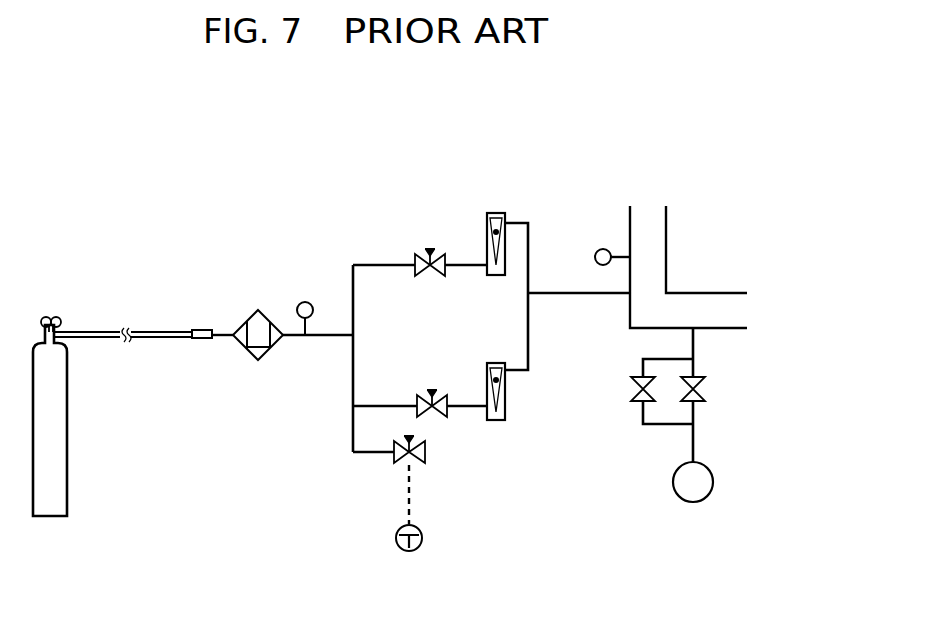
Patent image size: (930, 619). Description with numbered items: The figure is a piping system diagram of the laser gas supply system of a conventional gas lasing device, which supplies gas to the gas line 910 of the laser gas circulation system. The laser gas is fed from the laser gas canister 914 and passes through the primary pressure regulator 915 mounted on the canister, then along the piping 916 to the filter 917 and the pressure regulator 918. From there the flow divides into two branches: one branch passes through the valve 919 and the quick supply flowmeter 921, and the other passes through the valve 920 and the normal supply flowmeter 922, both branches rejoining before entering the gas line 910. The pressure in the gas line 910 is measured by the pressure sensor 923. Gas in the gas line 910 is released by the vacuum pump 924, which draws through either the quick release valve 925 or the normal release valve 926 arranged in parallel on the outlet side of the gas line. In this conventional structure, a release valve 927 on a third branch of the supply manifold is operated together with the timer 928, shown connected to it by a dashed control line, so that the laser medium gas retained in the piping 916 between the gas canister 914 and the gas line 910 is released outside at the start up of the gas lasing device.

The gas line 910 is at (690, 292).
The laser gas canister 914 is at (48, 517).
The primary pressure regulator 915 is at (47, 318).
The piping 916 is at (147, 340).
The filter 917 is at (250, 353).
The pressure regulator 918 is at (300, 302).
The valve 919 is at (420, 255).
The valve 920 is at (418, 397).
The quick supply flowmeter 921 is at (493, 213).
The normal supply flowmeter 922 is at (503, 422).
The pressure sensor 923 is at (599, 248).
The vacuum pump 924 is at (690, 503).
The quick release valve 925 is at (708, 398).
The normal release valve 926 is at (633, 400).
The release valve 927 is at (422, 463).
The timer 928 is at (417, 548).